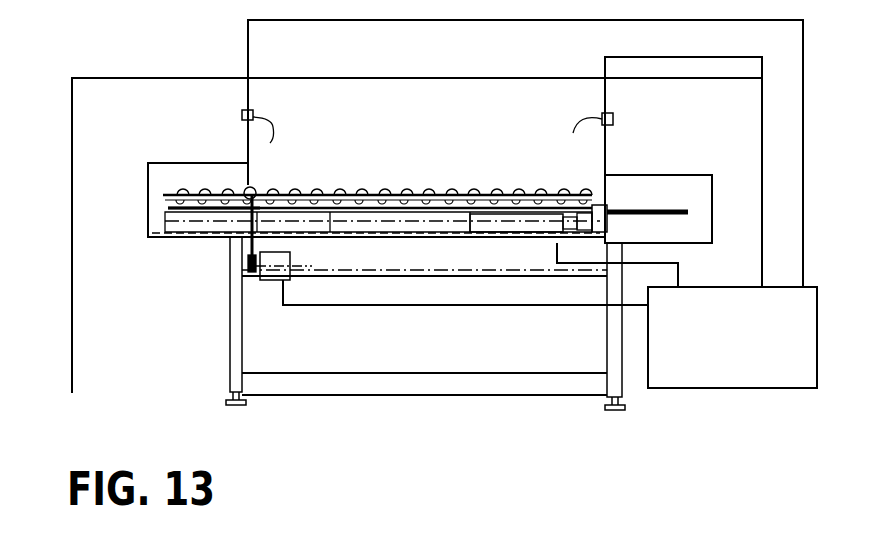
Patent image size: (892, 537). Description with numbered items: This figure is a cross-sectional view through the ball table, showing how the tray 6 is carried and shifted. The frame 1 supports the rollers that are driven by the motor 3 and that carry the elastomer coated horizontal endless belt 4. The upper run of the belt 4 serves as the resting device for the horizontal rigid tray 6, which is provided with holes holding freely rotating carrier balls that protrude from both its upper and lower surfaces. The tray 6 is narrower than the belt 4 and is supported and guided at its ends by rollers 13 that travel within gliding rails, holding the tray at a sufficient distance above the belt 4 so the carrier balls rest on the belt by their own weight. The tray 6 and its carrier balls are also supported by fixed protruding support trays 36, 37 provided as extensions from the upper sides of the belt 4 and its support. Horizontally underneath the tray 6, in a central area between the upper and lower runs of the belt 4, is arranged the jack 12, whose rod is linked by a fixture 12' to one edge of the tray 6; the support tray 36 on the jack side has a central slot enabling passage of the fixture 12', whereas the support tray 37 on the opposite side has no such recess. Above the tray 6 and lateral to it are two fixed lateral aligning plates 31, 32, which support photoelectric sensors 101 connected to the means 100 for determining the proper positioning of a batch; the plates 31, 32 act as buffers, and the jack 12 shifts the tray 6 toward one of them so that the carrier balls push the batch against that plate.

The frame 1 is at (210, 345).
The motor 3 is at (267, 283).
The belt 4 is at (350, 240).
The tray 6 is at (172, 193).
The jack 12 is at (531, 288).
The fixture 12' is at (642, 172).
The rollers 13 is at (254, 188).
The lateral aligning plate 31 is at (610, 130).
The lateral aligning plate 32 is at (247, 143).
The support tray 36 is at (667, 207).
The support tray 37 is at (165, 212).
The means 100 is at (444, 206).
The photoelectric sensors 101 is at (427, 145).